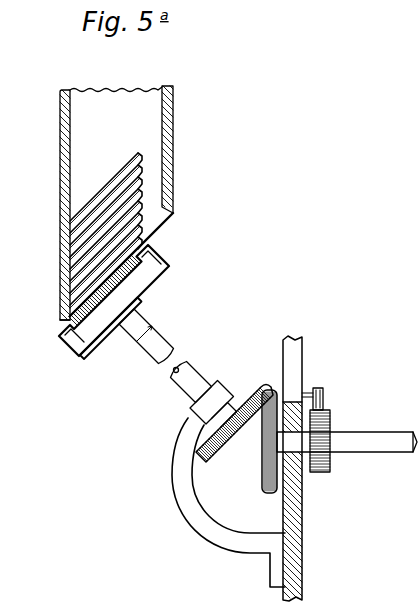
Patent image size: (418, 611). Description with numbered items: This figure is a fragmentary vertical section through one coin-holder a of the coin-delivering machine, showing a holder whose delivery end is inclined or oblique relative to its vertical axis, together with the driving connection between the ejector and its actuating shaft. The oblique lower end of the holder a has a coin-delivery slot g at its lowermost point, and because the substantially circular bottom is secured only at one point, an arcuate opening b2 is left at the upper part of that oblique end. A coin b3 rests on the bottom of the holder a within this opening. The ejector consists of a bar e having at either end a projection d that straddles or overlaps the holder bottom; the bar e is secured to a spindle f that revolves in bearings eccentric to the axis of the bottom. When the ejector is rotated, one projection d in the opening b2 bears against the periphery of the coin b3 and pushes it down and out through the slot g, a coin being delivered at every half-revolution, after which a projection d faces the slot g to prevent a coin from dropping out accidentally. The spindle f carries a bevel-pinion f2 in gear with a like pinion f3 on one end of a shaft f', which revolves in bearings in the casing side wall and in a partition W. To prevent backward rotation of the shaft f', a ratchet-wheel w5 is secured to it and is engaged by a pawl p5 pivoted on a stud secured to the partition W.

The coin-holder a is at (168, 118).
The arcuate opening b2 is at (158, 227).
The coin b3 is at (87, 307).
The projection d is at (48, 364).
The ejector bar e is at (150, 287).
The coin-delivery slot g is at (60, 320).
The ejector-spindle f is at (178, 368).
The bevel-pinion f2 is at (218, 455).
The bevel-pinion f3 is at (262, 473).
The ejector-actuating shaft f' is at (347, 425).
The pawl p5 is at (320, 406).
The ratchet-wheel w5 is at (332, 467).
The partition W is at (303, 521).